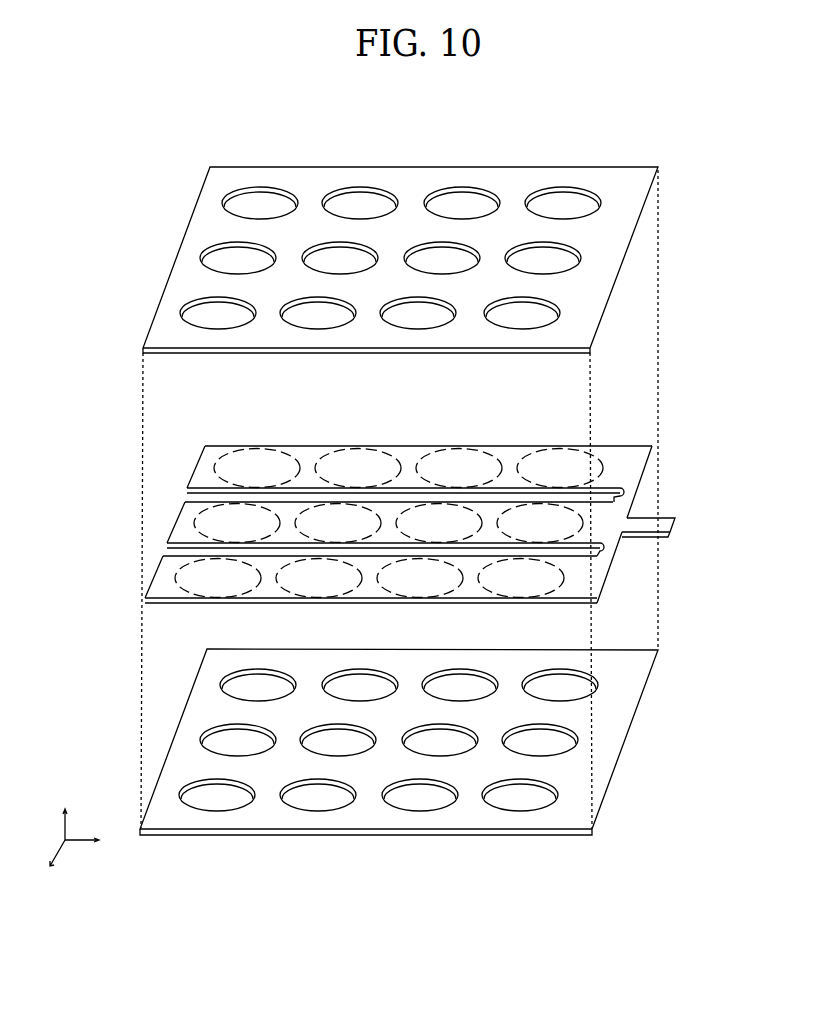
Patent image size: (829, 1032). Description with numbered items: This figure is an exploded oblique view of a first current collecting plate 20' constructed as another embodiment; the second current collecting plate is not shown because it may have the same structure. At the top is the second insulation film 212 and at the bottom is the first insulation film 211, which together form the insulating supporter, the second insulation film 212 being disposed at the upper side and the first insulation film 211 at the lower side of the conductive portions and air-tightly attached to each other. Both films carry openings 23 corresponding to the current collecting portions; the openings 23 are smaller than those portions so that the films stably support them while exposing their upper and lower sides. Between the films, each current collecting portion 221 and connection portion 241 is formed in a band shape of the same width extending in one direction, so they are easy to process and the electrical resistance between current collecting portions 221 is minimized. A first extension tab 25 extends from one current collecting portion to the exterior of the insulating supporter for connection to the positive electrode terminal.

The first current collecting plate 20' is at (385, 504).
The opening 23 is at (259, 196).
The second insulation film 212 is at (608, 167).
The first insulation film 211 is at (618, 717).
The current collecting portion 221 is at (258, 462).
The connection portion 241 is at (510, 456).
The first extension tab 25 is at (678, 516).